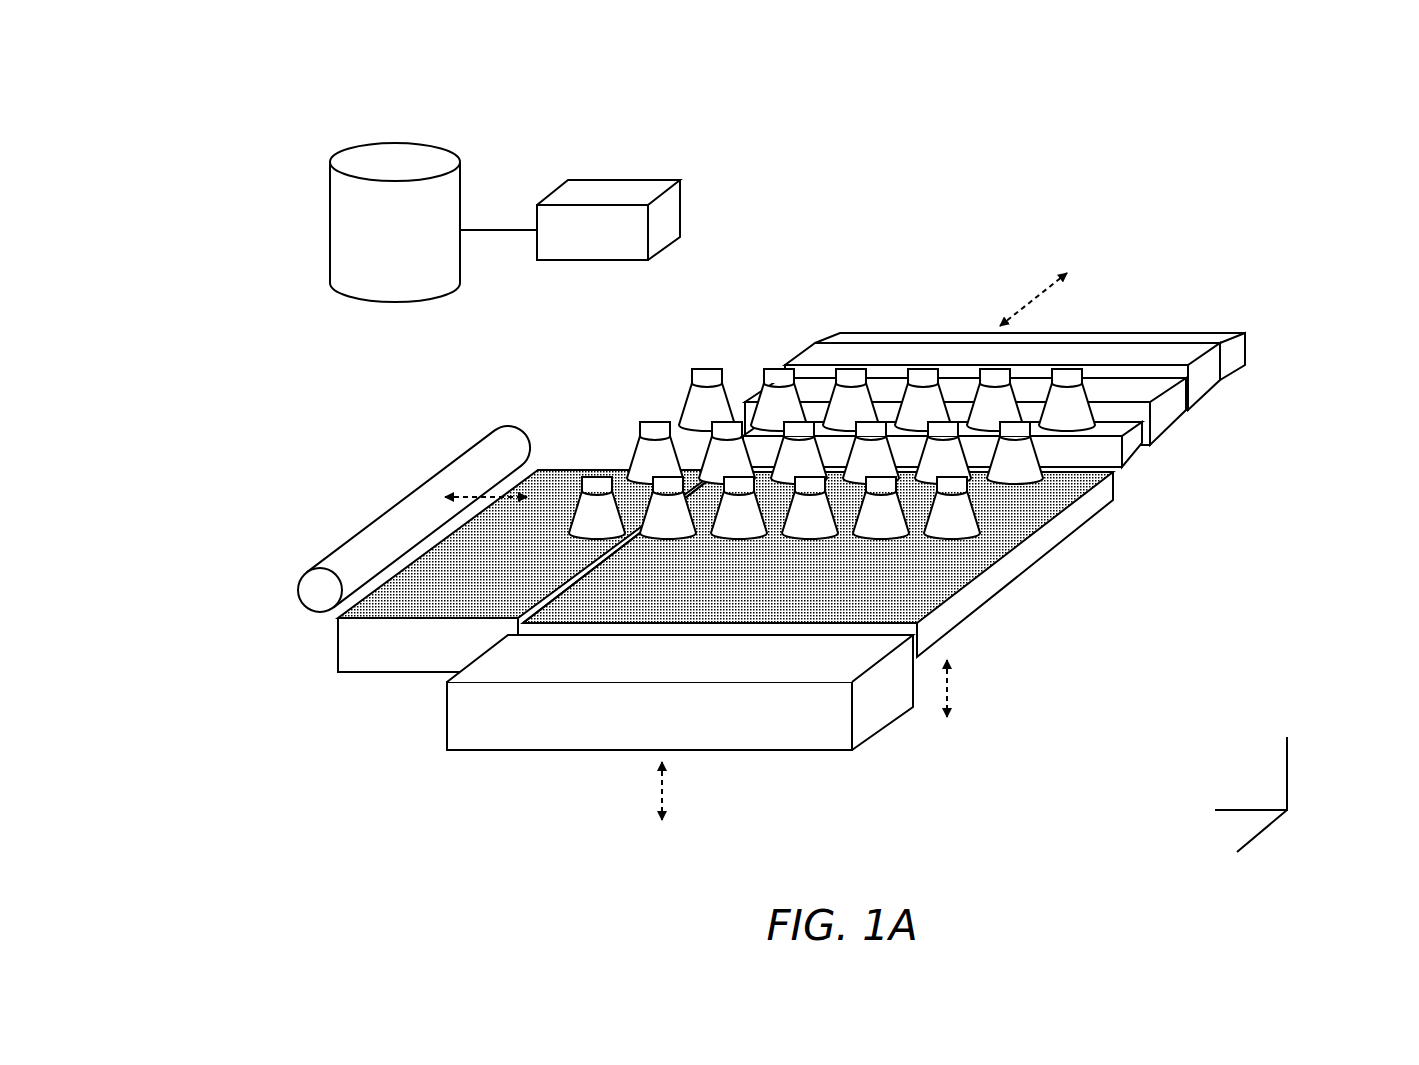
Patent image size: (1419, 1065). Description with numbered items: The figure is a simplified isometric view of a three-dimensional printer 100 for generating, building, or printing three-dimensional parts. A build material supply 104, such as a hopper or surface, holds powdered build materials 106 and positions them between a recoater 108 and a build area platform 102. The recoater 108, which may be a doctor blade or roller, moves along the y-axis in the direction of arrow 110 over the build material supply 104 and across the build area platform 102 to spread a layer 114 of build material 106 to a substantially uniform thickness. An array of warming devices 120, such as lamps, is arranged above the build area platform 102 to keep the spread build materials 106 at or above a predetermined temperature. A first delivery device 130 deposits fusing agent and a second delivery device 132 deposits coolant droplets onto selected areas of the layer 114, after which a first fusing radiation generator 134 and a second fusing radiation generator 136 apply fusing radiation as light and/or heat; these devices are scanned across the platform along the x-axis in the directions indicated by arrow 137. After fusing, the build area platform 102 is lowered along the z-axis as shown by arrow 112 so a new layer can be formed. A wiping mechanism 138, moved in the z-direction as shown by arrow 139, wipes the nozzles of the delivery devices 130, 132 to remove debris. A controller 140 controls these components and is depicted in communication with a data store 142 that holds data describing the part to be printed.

The three-dimensional (3D) printer 100 is at (410, 90).
The build area platform 102 is at (822, 598).
The build material supply 104 is at (454, 646).
The build materials 106 is at (337, 630).
The recoater 108 is at (352, 535).
The arrow 110 is at (487, 493).
The arrow 112 is at (950, 678).
The layer 114 is at (1035, 537).
The warming devices 120 is at (707, 369).
The first delivery device 130 is at (1167, 428).
The second delivery device 132 is at (1208, 398).
The first fusing radiation generator 134 is at (1128, 462).
The second fusing radiation generator 136 is at (1210, 332).
The arrow 137 is at (1030, 300).
The wiping mechanism 138 is at (503, 750).
The arrow 139 is at (665, 782).
The controller 140 is at (630, 180).
The data store 142 is at (378, 275).